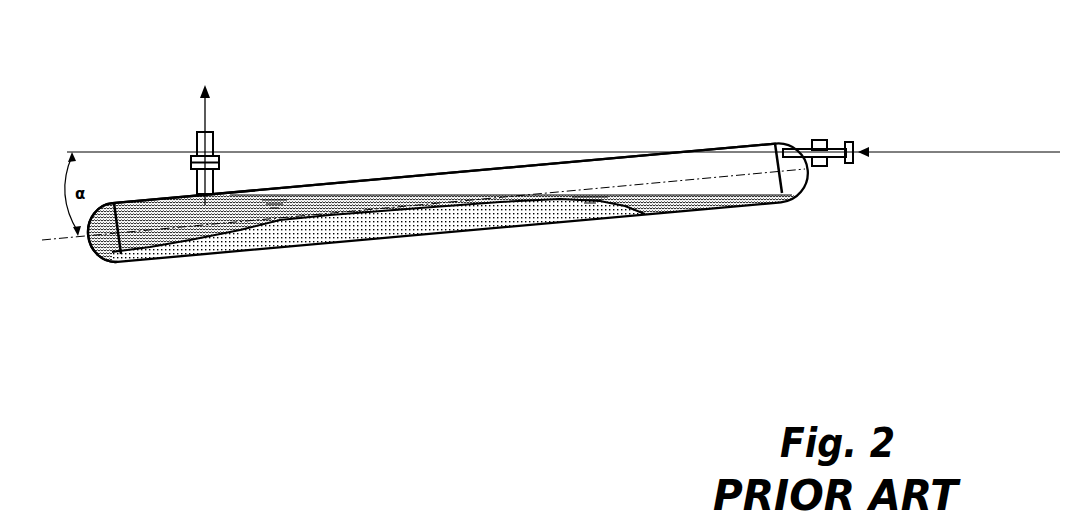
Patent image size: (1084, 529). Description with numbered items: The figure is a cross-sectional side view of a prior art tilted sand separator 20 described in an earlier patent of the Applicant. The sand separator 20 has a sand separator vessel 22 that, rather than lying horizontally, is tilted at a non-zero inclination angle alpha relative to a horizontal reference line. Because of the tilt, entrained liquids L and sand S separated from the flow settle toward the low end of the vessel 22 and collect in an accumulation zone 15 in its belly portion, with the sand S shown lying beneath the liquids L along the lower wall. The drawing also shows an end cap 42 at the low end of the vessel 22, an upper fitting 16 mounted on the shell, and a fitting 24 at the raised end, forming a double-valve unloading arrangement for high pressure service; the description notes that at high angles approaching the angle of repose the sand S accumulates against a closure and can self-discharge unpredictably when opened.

The sand separator 20 is at (518, 281).
The sand separator vessel 22 is at (387, 177).
The tank end cap 42 is at (94, 253).
The accumulation zone 15 is at (368, 223).
The sand S is at (433, 225).
The liquids L is at (157, 220).
The inlet valve 16 is at (196, 140).
The outlet valve 24 is at (812, 141).